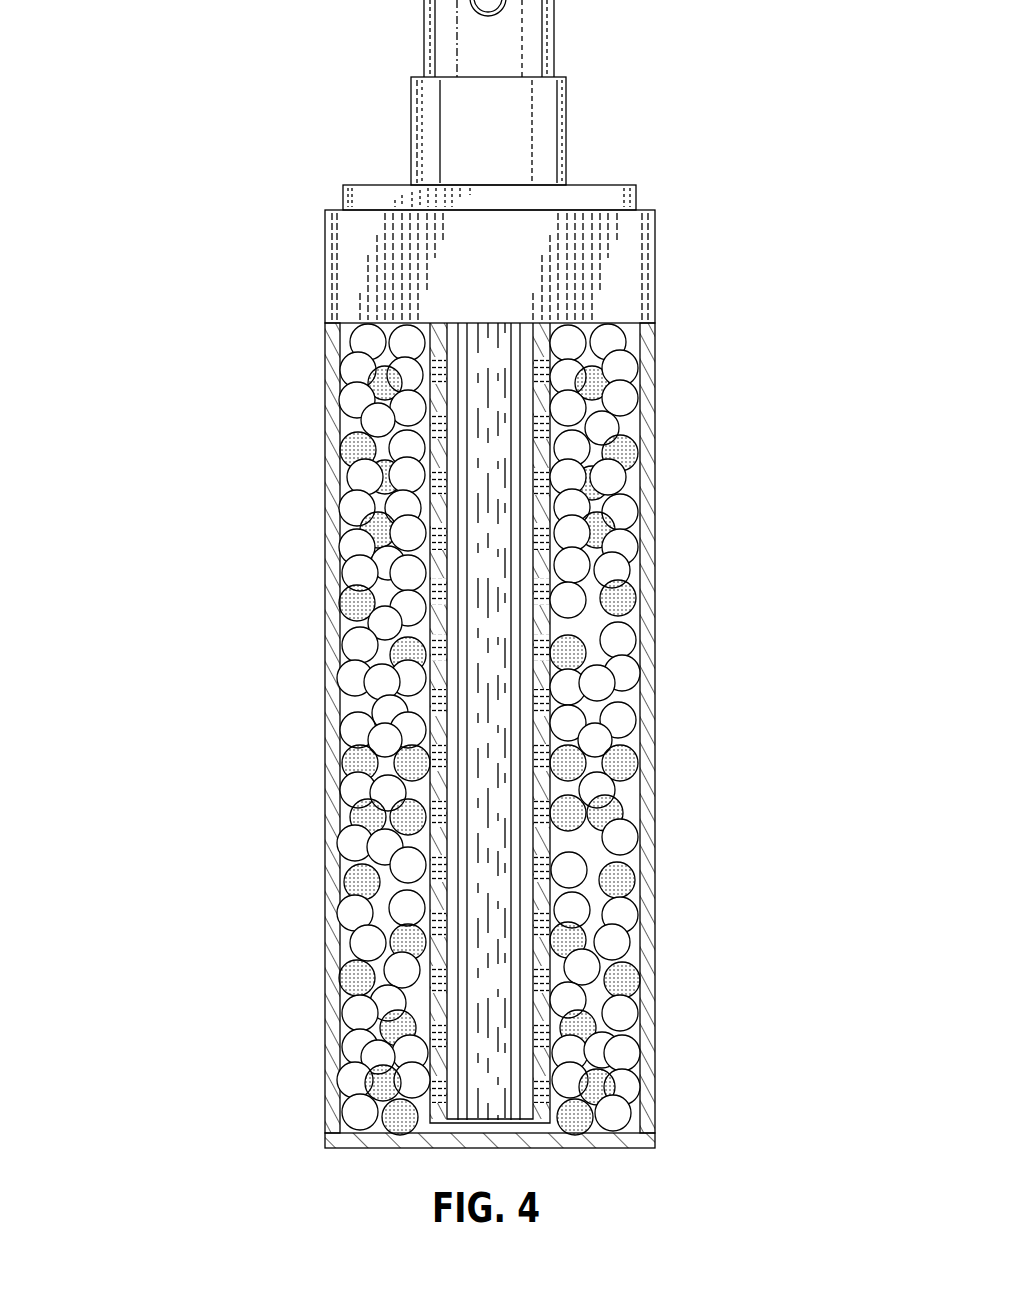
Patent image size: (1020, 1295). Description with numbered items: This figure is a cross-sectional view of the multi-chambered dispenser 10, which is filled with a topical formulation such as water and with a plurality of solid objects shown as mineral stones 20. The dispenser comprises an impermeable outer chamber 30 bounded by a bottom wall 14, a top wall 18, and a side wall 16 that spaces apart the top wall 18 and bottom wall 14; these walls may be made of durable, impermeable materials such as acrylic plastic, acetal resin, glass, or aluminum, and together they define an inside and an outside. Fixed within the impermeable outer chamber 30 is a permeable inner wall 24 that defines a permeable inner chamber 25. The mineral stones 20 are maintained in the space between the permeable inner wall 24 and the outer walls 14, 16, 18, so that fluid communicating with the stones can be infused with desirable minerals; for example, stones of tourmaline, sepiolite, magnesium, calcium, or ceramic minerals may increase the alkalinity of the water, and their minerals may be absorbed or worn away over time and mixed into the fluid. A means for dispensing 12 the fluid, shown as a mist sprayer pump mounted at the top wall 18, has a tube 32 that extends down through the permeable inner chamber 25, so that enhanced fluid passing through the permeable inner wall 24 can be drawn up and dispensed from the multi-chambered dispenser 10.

The multi-chambered dispenser 10 is at (165, 143).
The means for dispensing 12 is at (420, 76).
The bottom wall 14 is at (627, 1157).
The side wall 16 is at (655, 703).
The top wall 18 is at (607, 185).
The mineral stones 20 is at (358, 878).
The permeable inner wall 24 is at (437, 620).
The permeable inner chamber 25 is at (495, 816).
The impermeable outer chamber 30 is at (310, 433).
The tube 32 is at (459, 530).